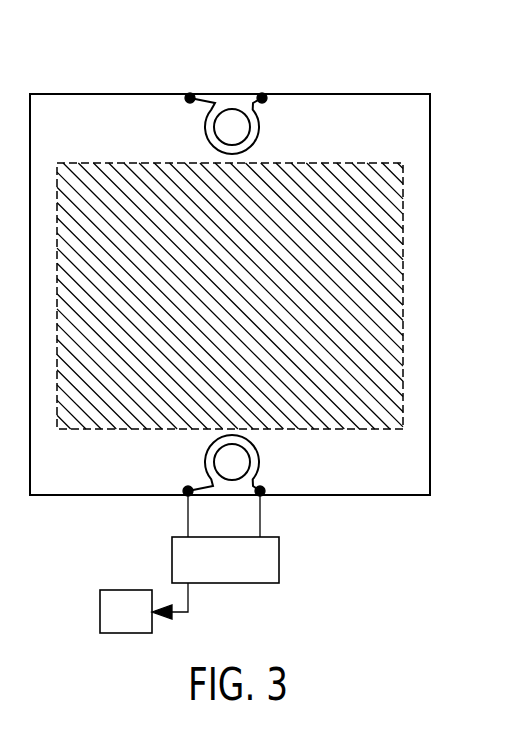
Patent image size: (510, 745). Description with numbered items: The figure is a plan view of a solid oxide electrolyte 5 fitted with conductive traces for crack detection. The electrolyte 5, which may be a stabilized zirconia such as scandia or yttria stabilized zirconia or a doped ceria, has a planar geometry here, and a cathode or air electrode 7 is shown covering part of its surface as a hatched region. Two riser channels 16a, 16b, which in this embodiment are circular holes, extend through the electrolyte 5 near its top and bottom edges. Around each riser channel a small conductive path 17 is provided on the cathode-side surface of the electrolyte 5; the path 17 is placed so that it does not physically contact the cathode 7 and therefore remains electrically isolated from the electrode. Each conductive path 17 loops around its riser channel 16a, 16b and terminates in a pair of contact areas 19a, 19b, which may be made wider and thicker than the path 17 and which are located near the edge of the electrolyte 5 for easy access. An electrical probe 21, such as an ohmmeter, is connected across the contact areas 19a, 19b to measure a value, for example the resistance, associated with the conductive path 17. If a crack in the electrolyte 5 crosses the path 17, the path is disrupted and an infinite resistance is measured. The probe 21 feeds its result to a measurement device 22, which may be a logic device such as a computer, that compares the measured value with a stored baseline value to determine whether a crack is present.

The solid oxide electrolyte 5 is at (363, 107).
The cathode electrode 7 is at (404, 236).
The riser channel 16a is at (236, 117).
The riser channel 16b is at (220, 463).
The conductive path 17 is at (259, 138).
The contact area 19a is at (190, 96).
The contact area 19b is at (262, 96).
The electrical probe 21 is at (281, 557).
The measurement device 22 is at (100, 596).